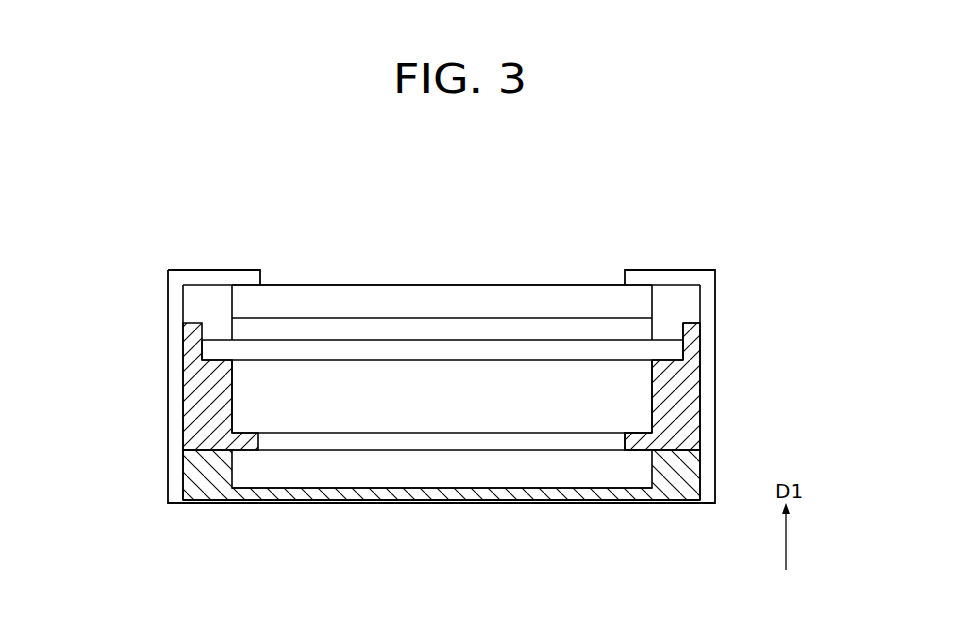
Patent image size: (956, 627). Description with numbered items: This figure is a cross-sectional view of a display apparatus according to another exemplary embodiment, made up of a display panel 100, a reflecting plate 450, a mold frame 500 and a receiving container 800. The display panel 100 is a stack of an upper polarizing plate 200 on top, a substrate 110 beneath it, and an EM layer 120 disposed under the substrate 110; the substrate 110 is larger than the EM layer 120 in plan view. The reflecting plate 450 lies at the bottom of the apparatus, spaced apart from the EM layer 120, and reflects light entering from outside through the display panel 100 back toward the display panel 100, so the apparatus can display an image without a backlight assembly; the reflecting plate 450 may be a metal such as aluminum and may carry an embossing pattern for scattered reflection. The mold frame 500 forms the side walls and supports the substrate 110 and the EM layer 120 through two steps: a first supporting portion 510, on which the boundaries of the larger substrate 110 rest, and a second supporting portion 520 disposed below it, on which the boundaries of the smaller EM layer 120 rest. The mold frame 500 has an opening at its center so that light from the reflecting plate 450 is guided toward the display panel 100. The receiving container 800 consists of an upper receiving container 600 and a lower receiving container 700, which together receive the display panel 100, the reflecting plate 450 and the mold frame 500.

The display panel 100 is at (525, 322).
The substrate 110 is at (678, 348).
The EM layer 120 is at (622, 370).
The upper polarizing plate 200 is at (664, 302).
The reflecting plate 450 is at (441, 468).
The mold frame 500 is at (708, 389).
The first supporting portion 510 is at (668, 372).
The second supporting portion 520 is at (638, 438).
The upper receiving container 600 is at (176, 322).
The lower receiving container 700 is at (396, 475).
The receiving container 800 is at (368, 402).